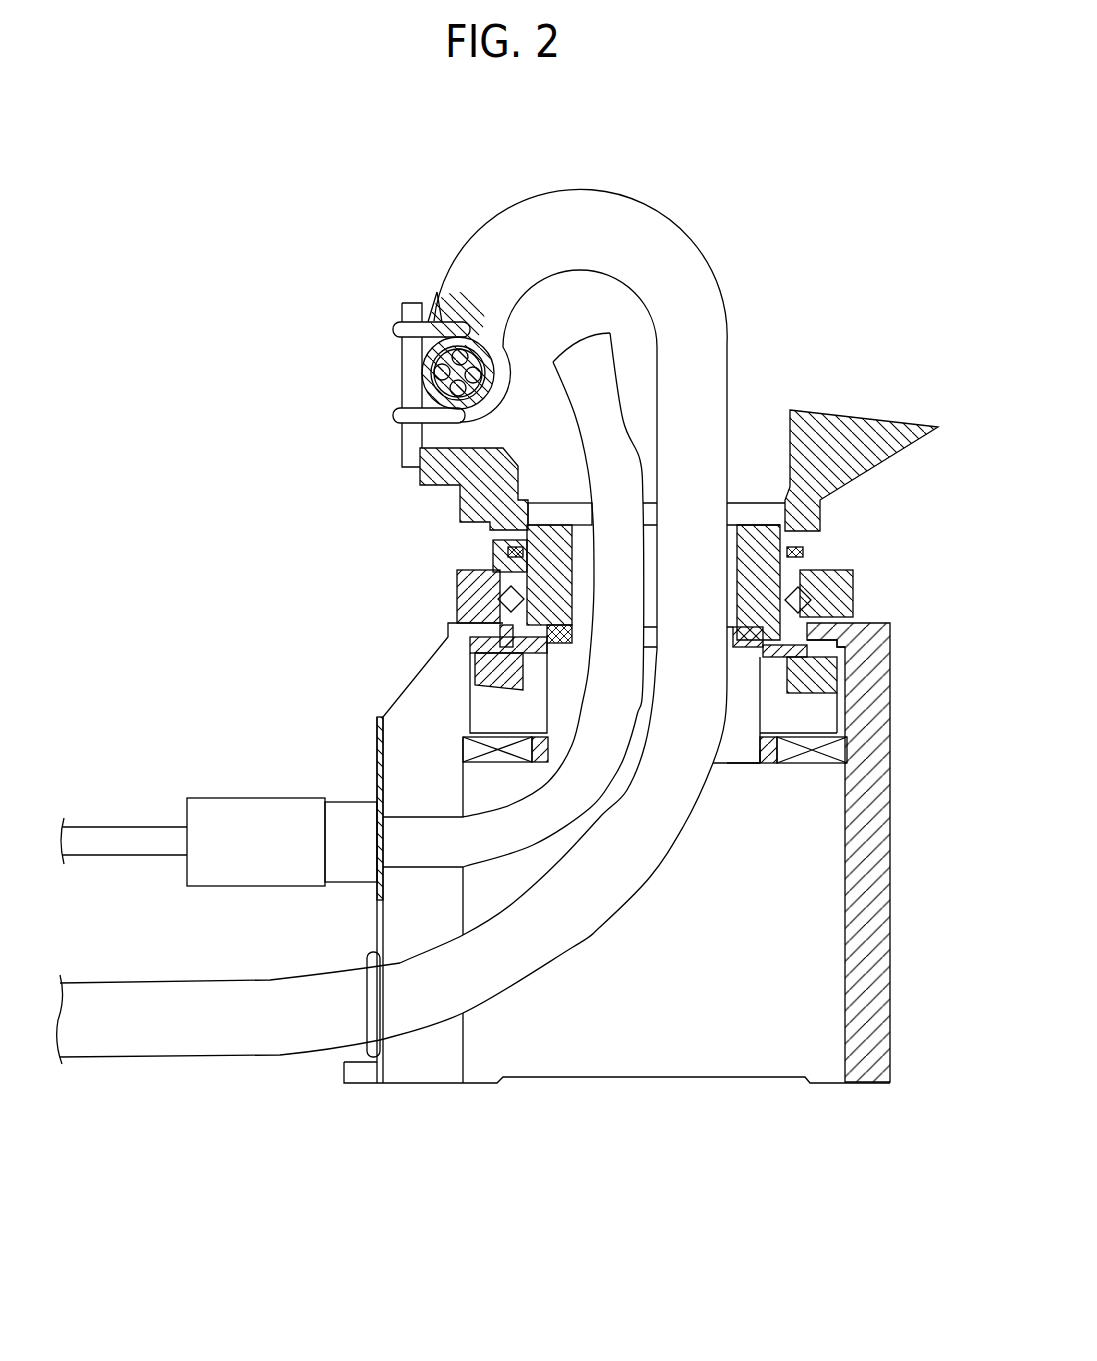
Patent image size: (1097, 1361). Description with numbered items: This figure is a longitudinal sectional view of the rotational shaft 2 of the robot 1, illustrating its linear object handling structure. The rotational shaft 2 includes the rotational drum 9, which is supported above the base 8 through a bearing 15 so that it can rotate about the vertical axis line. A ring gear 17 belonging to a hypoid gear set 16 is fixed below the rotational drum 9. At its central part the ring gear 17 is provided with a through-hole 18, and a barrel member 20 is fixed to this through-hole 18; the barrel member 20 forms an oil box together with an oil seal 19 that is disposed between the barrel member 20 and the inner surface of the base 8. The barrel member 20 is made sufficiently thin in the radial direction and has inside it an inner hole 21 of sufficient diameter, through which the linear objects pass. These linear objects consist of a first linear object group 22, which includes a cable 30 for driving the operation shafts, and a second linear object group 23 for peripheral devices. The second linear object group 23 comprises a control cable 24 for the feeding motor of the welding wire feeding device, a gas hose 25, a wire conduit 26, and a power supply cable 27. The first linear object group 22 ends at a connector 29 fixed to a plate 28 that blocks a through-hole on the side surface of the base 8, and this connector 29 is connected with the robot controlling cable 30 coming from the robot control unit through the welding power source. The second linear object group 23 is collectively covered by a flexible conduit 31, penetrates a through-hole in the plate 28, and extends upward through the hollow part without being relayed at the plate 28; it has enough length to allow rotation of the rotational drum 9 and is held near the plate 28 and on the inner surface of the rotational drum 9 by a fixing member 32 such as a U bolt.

The robot 1 is at (188, 285).
The rotational shaft 2 is at (925, 592).
The base 8 is at (890, 905).
The rotational drum 9 is at (820, 518).
The bearing 15 is at (855, 588).
The hypoid gear set 16 is at (858, 660).
The ring gear 17 is at (840, 693).
The through-hole 18 is at (755, 645).
The oil seal 19 is at (850, 748).
The barrel member 20 is at (790, 763).
The inner hole 21 is at (740, 763).
The first linear object group 22 is at (420, 800).
The second linear object group 23 is at (106, 1078).
The control cable 24 is at (460, 343).
The gas hose 25 is at (490, 362).
The wire conduit 26 is at (487, 397).
The power supply cable 27 is at (420, 368).
The plate 28 is at (375, 740).
The connector 29 is at (343, 887).
The robot controlling cable 30 is at (116, 808).
The conduit 31 is at (177, 1060).
The fixing member 32 is at (440, 318).